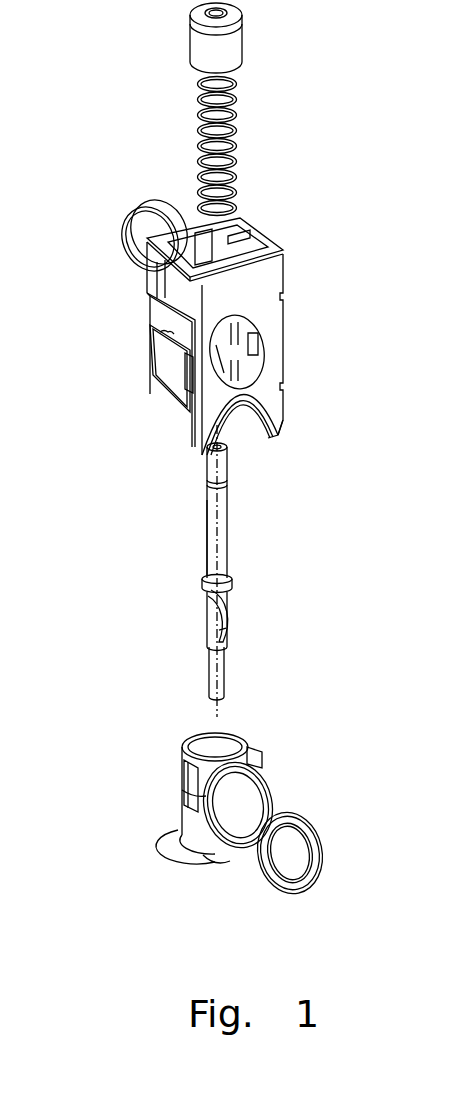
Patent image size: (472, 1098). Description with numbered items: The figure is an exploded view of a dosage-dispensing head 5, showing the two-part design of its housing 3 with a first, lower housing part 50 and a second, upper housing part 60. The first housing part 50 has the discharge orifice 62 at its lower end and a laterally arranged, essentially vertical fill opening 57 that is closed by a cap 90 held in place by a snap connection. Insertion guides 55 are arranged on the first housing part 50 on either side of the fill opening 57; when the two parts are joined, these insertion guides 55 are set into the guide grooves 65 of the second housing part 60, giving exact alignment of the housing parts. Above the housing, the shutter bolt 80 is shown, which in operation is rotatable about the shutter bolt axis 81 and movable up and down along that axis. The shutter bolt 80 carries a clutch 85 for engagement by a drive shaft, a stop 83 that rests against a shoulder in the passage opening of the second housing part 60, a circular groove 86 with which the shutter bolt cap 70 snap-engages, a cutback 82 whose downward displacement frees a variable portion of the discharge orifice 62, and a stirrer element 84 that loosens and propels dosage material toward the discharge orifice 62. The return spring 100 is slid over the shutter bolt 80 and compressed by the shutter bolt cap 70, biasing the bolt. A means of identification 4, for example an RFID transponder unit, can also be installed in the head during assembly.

The housing 3 is at (182, 762).
The means of identification 4 is at (123, 227).
The dosage-dispensing head 5 is at (110, 115).
The first housing part 50 is at (225, 823).
The insertion guides 55 is at (198, 780).
The fill opening 57 is at (253, 800).
The second housing part 60 is at (270, 315).
The discharge orifice 62 is at (217, 875).
The guide grooves 65 is at (277, 431).
The shutter bolt cap 70 is at (235, 48).
The shutter bolt 80 is at (276, 571).
The shutter bolt axis 81 is at (220, 532).
The cutback 82 is at (223, 667).
The stop 83 is at (230, 580).
The stirrer element 84 is at (230, 622).
The clutch 85 is at (228, 450).
The circular groove 86 is at (228, 483).
The cap 90 is at (318, 856).
The return spring 100 is at (236, 152).